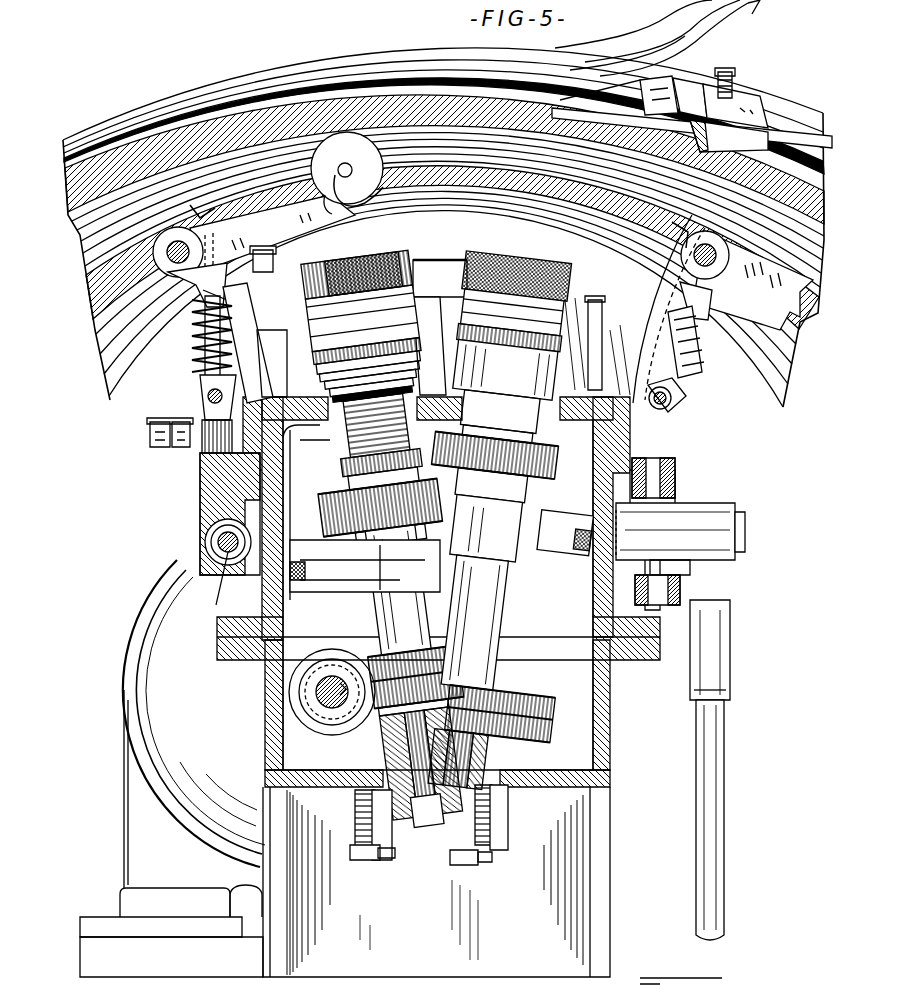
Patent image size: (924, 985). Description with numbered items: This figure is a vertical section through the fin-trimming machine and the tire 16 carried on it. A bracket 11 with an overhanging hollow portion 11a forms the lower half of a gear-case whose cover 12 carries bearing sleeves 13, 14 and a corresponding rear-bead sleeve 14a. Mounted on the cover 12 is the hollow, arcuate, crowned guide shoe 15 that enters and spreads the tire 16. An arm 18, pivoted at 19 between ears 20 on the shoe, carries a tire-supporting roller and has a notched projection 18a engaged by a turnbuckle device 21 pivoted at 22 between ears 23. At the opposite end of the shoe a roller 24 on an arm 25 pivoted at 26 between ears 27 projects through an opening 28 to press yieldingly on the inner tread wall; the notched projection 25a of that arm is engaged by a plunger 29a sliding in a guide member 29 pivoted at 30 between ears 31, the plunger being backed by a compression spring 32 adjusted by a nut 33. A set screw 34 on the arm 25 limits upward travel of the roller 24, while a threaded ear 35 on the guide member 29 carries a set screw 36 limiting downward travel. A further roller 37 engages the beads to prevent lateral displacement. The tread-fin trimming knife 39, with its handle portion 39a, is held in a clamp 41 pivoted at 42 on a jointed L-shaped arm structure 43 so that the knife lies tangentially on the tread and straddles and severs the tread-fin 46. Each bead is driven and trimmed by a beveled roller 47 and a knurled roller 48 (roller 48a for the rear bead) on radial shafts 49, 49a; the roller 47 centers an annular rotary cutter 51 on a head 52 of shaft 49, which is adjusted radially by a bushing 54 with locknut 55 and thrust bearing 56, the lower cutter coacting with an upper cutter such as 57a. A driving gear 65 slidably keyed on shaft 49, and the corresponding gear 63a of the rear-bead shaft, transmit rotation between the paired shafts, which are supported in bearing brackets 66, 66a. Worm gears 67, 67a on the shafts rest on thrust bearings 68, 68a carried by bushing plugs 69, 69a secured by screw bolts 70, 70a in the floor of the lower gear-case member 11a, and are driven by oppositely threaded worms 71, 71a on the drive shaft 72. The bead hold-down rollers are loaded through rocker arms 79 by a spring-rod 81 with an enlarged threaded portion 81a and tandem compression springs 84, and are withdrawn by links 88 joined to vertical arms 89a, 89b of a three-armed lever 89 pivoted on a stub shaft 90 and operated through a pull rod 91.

The bracket 11 is at (345, 768).
The hollow portion of bracket 11a is at (606, 710).
The gear-case cover 12 is at (612, 458).
The bearing sleeve 13 is at (340, 453).
The bearing sleeve 14 is at (416, 374).
The bearing sleeve 14a is at (468, 341).
The guide shoe 15 is at (637, 309).
The tire 16 is at (403, 108).
The arm 18 is at (803, 300).
The notched projection 18a is at (695, 302).
The pivot 19 is at (712, 248).
The ears 20 is at (687, 232).
The turnbuckle device 21 is at (690, 370).
The pivot 22 is at (672, 402).
The ears 23 is at (650, 412).
The roller 24 is at (374, 206).
The arm 25 is at (272, 233).
The notched projection 25a is at (200, 292).
The pivot 26 is at (167, 256).
The ears 27 is at (197, 217).
The opening 28 is at (385, 190).
The guide member 29 is at (207, 396).
The plunger 29a is at (204, 334).
The pivot 30 is at (222, 408).
The ears 31 is at (243, 400).
The helical compression spring 32 is at (200, 374).
The nut 33 is at (234, 296).
The set screw 34 is at (276, 258).
The threaded ear 35 is at (195, 452).
The set screw 36 is at (212, 480).
The roller 37 is at (312, 296).
The tread-fin trimming knife 39 is at (632, 116).
The handle portion 39a is at (790, 136).
The clamp 41 is at (727, 100).
The pivot 42 is at (770, 98).
The arm structure 43 is at (694, 110).
The tread-fin 46 is at (740, 19).
The roller 47 is at (420, 300).
The roller 48 is at (400, 262).
The roller 48a is at (478, 262).
The shaft 49 is at (392, 622).
The drive shaft 49a is at (540, 604).
The rotary cutter 51 is at (322, 326).
The head 52 is at (326, 342).
The bushing 54 is at (330, 373).
The locknut 55 is at (330, 391).
The thrust bearing 56 is at (330, 356).
The rotary cutter 57a is at (462, 304).
The driving gear 63a is at (552, 472).
The driving gear 65 is at (330, 510).
The bracket 66 is at (365, 566).
The bracket 66a is at (522, 533).
The worm gear 67 is at (470, 670).
The worm gear 67a is at (592, 716).
The thrust bearing 68 is at (372, 718).
The thrust bearing 68a is at (540, 748).
The bushing plug 69 is at (362, 830).
The bushing plug 69a is at (520, 830).
The screw bolts 70 is at (378, 862).
The screw bolts 70a is at (402, 850).
The worm 71 is at (312, 710).
The worm 71a is at (303, 660).
The drive shaft 72 is at (325, 690).
The rocker arm 79 is at (205, 505).
The spring-rod 81 is at (217, 542).
The enlarged portion 81a is at (227, 556).
The compression springs 84 is at (205, 550).
The links 88 is at (668, 470).
The three armed lever 89 is at (722, 502).
The vertical arm 89a is at (658, 500).
The vertical arm 89b is at (662, 562).
The stub shaft 90 is at (742, 522).
The pull rod 91 is at (728, 750).